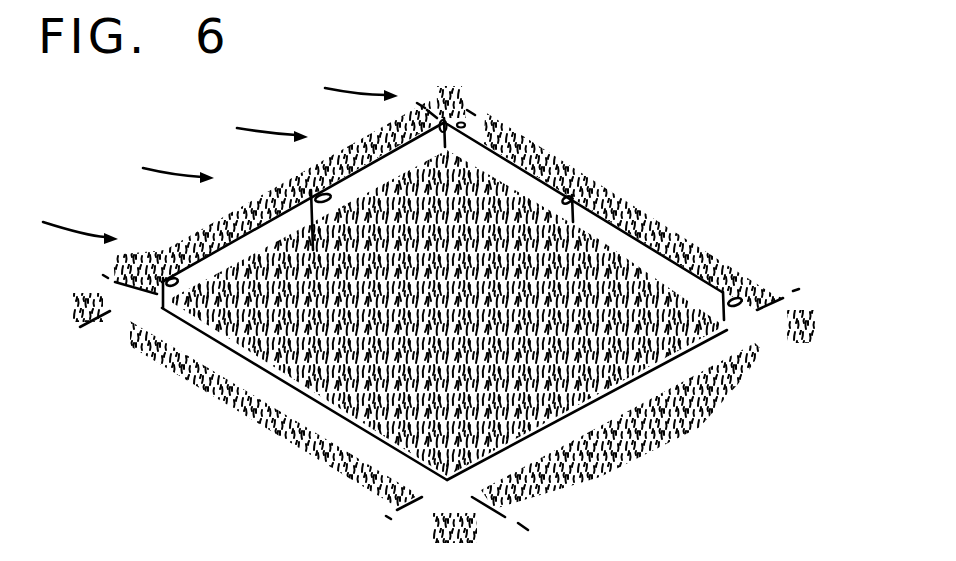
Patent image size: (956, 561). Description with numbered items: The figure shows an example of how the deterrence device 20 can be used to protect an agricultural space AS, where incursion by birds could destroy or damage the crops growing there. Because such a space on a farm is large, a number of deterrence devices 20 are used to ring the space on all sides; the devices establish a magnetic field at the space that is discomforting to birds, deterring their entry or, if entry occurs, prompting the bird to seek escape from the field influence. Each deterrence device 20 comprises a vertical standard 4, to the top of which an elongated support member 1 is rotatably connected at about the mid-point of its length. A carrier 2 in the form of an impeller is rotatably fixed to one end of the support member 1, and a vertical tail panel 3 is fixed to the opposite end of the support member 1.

The elongated support member 1 is at (450, 126).
The carrier 2 is at (440, 128).
The vertical tail panel 3 is at (448, 128).
The vertical standard 4 is at (448, 147).
The deterrence device 20 is at (150, 302).
The agricultural space AS is at (293, 340).